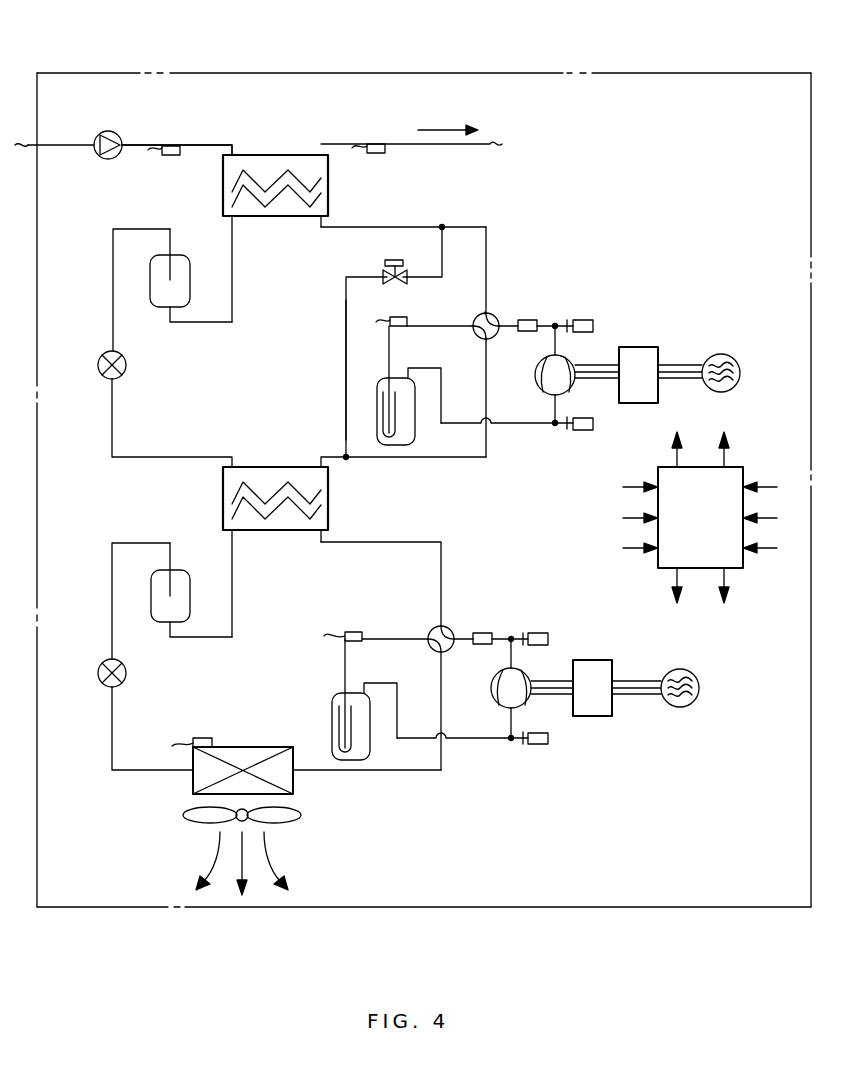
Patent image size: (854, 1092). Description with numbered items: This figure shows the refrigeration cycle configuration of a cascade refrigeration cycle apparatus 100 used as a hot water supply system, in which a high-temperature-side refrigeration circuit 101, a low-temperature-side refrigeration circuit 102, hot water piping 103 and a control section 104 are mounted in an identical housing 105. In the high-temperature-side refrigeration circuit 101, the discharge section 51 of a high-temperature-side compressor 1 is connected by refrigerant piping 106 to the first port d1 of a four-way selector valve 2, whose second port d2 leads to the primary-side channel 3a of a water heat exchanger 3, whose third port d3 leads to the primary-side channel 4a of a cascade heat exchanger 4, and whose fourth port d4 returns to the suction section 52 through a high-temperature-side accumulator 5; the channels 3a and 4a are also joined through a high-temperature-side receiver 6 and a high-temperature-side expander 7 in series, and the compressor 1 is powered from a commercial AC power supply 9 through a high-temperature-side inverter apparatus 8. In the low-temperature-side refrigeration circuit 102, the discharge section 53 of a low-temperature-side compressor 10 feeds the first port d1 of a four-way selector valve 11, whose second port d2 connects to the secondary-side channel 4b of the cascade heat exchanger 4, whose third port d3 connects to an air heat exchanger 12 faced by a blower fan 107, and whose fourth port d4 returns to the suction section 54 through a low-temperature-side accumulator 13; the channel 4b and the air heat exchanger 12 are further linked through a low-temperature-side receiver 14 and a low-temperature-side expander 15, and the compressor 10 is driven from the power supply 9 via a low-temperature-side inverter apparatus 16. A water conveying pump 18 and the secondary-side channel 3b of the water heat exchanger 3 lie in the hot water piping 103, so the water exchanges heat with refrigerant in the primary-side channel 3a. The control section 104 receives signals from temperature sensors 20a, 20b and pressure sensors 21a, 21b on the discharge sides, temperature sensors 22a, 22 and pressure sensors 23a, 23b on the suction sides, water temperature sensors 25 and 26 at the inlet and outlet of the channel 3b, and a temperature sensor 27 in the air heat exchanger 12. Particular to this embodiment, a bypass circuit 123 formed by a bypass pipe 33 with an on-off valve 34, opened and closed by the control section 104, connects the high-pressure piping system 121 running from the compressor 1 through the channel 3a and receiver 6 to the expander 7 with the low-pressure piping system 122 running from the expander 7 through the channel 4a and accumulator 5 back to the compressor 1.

The high-temperature-side compressor 1 is at (558, 374).
The four-way selector valve 2 is at (460, 481).
The water heat exchanger 3 is at (275, 183).
The primary-side channel 3a is at (285, 196).
The secondary-side channel 3b is at (300, 180).
The cascade heat exchanger 4 is at (275, 497).
The primary-side channel 4a is at (302, 490).
The secondary-side channel 4b is at (283, 507).
The high-temperature-side accumulator 5 is at (380, 384).
The high-temperature-side receiver 6 is at (178, 256).
The high-temperature-side expander 7 is at (98, 365).
The high-temperature-side inverter apparatus 8 is at (645, 347).
The commercial AC power supply 9 is at (720, 354).
The low-temperature-side compressor 10 is at (521, 695).
The four-way selector valve 11 is at (450, 626).
The air heat exchanger 12 is at (245, 747).
The low-temperature-side accumulator 13 is at (333, 698).
The low-temperature-side receiver 14 is at (170, 570).
The low-temperature-side expander 15 is at (98, 673).
The low-temperature-side inverter apparatus 16 is at (600, 716).
The water conveying pump 18 is at (108, 159).
The temperature sensor 20a is at (530, 318).
The temperature sensor 20b is at (490, 633).
The pressure sensor 21a is at (585, 318).
The pressure sensor 21b is at (549, 639).
The temperature sensor 22 is at (353, 631).
The temperature sensor 22a is at (406, 316).
The pressure sensor 23a is at (583, 431).
The pressure sensor 23b is at (538, 745).
The water temperature sensor 25 is at (171, 156).
The water temperature sensor 26 is at (376, 154).
The temperature sensor 27 is at (202, 738).
The bypass pipe 33 is at (344, 360).
The on-off valve 34 is at (380, 272).
The discharge section 51 is at (562, 353).
The suction section 52 is at (548, 397).
The discharge section 53 is at (520, 667).
The suction section 54 is at (505, 710).
The cascade refrigeration cycle apparatus 100 is at (634, 55).
The high-temperature-side refrigeration circuit 101 is at (642, 240).
The low-temperature-side refrigeration circuit 102 is at (612, 812).
The hot water piping 103 is at (215, 138).
The control section 104 is at (736, 467).
The housing 105 is at (470, 73).
The refrigerant piping 106 is at (474, 235).
The blower fan 107 is at (298, 820).
The high-pressure piping system 121 is at (420, 218).
The low-pressure piping system 122 is at (381, 468).
The bypass circuit 123 is at (334, 325).
The first port d1 is at (495, 340).
The second port d2 is at (487, 311).
The third port d3 is at (481, 342).
The fourth port d4 is at (471, 330).